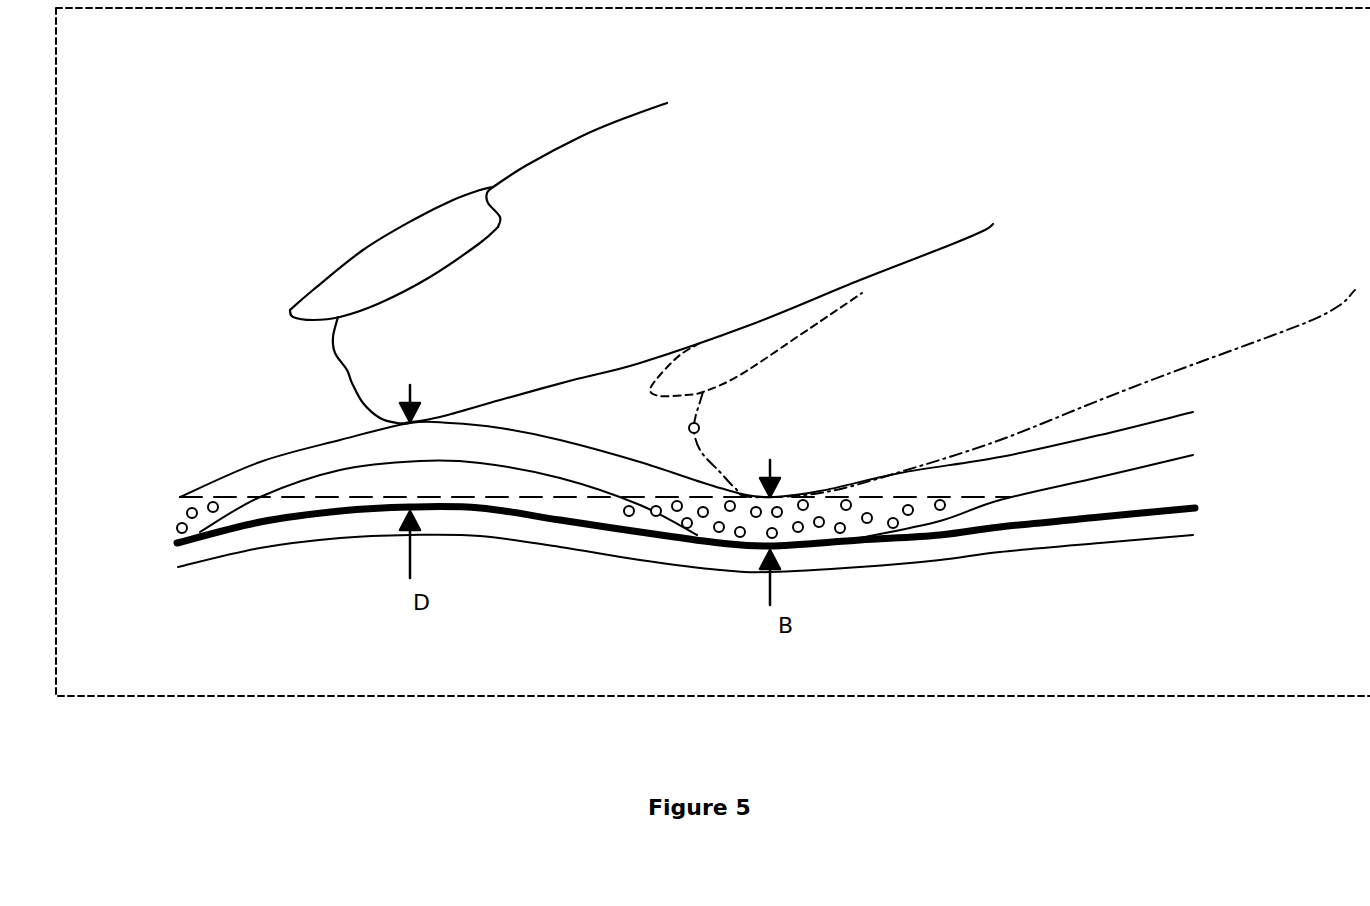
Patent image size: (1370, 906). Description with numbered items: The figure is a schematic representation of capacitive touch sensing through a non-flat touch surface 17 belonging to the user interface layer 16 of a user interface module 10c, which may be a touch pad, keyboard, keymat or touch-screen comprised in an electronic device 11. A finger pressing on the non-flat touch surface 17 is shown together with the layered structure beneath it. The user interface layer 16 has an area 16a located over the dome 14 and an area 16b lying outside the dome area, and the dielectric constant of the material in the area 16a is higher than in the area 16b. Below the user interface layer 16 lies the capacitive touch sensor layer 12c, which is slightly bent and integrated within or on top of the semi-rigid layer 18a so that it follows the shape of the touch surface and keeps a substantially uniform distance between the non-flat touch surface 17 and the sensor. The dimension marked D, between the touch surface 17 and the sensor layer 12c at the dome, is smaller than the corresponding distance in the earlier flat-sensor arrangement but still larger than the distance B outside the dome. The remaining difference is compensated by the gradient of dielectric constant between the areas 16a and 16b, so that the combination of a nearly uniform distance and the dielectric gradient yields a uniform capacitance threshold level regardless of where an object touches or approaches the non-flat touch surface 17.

The user interface module 10c is at (839, 178).
The electronic device 11 is at (1038, 696).
The capacitive touch sensor layer 12c is at (1008, 532).
The dome 14 is at (340, 487).
The user interface layer 16 is at (226, 473).
The area of the user interface layer over the dome 16a is at (340, 443).
The area outside of the dome area 16b is at (828, 522).
The non-flat touch surface 17 is at (265, 453).
The semi-rigid layer 18a is at (560, 545).